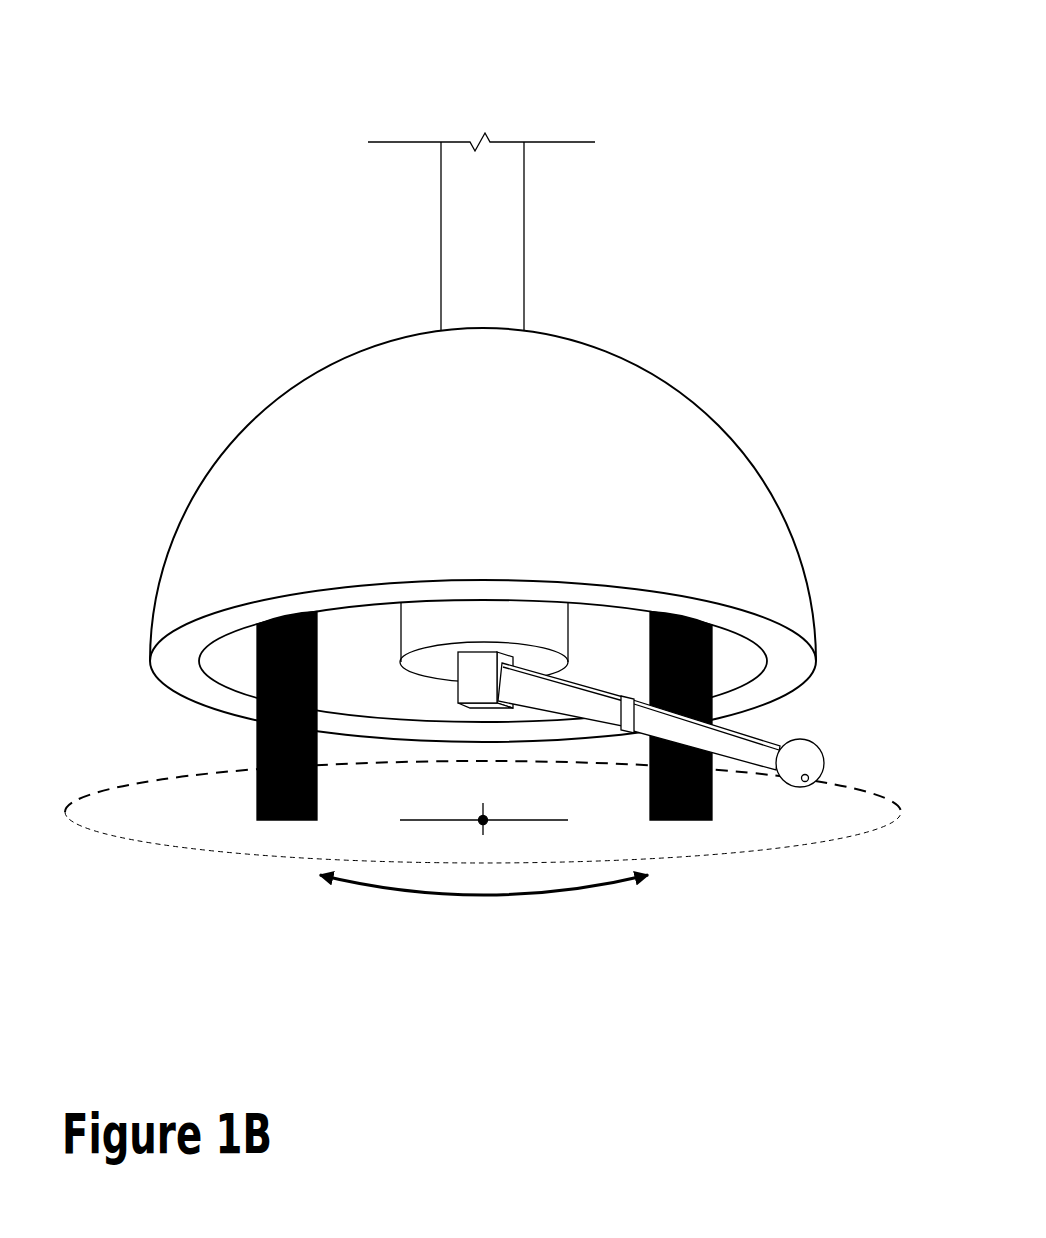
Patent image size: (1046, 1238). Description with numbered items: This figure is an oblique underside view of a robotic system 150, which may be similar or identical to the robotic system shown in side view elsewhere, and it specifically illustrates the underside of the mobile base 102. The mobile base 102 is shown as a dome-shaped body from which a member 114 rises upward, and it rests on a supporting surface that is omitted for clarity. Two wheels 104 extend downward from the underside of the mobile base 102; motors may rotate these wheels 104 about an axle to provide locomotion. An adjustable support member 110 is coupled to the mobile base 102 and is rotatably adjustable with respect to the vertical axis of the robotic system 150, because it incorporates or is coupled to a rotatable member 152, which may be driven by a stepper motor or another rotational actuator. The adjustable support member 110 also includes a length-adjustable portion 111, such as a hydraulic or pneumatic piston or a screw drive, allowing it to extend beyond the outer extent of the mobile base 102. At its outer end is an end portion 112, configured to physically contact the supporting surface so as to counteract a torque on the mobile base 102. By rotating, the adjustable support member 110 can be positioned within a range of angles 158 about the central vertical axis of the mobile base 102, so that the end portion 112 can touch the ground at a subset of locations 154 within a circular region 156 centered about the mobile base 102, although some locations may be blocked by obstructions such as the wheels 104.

The robotic system 150 is at (661, 66).
The mobile base 102 is at (328, 365).
The wheels 104 is at (257, 814).
The adjustable support member 110 is at (651, 705).
The length-adjustable portion 111 is at (741, 732).
The end portion 112 is at (836, 788).
The pole 114 is at (525, 292).
The rotatable member 152 is at (456, 690).
The locations 154 is at (809, 782).
The circular region 156 is at (724, 856).
The range of angles 158 is at (520, 895).